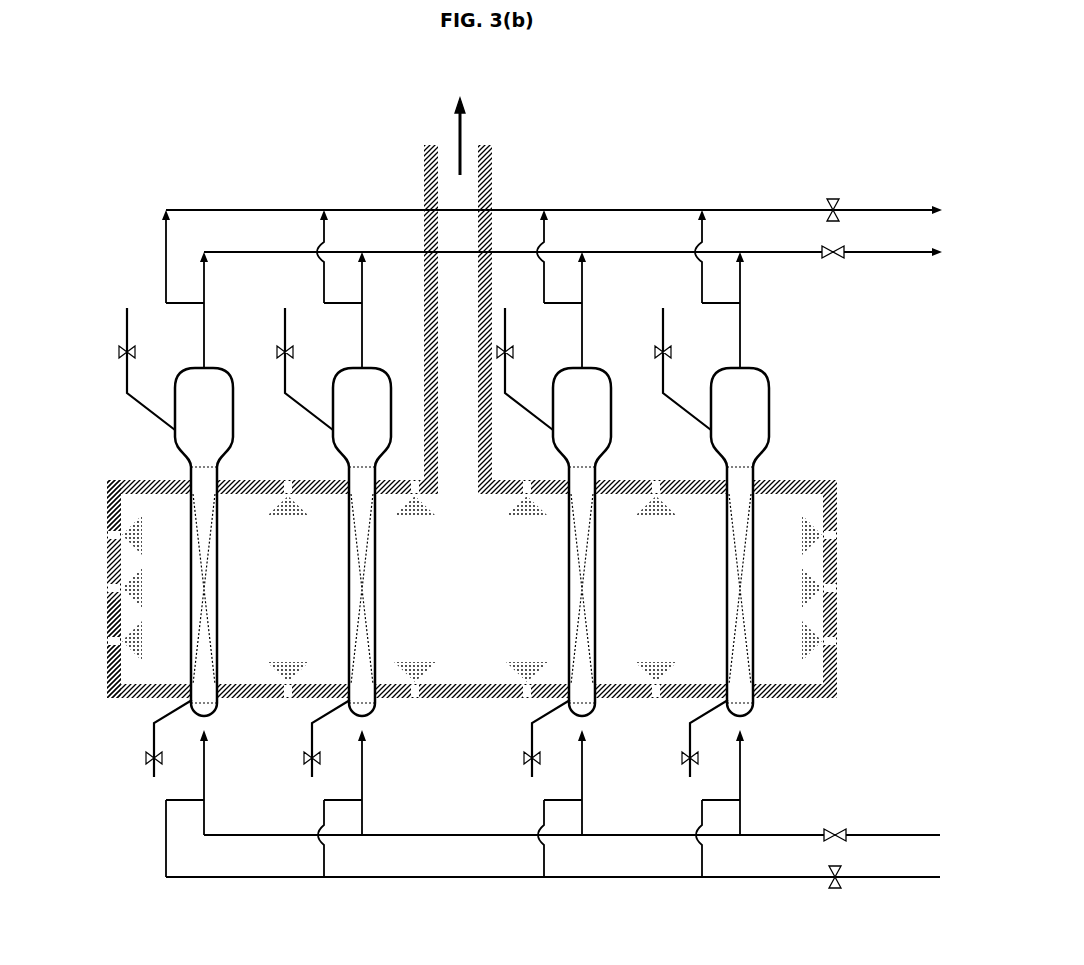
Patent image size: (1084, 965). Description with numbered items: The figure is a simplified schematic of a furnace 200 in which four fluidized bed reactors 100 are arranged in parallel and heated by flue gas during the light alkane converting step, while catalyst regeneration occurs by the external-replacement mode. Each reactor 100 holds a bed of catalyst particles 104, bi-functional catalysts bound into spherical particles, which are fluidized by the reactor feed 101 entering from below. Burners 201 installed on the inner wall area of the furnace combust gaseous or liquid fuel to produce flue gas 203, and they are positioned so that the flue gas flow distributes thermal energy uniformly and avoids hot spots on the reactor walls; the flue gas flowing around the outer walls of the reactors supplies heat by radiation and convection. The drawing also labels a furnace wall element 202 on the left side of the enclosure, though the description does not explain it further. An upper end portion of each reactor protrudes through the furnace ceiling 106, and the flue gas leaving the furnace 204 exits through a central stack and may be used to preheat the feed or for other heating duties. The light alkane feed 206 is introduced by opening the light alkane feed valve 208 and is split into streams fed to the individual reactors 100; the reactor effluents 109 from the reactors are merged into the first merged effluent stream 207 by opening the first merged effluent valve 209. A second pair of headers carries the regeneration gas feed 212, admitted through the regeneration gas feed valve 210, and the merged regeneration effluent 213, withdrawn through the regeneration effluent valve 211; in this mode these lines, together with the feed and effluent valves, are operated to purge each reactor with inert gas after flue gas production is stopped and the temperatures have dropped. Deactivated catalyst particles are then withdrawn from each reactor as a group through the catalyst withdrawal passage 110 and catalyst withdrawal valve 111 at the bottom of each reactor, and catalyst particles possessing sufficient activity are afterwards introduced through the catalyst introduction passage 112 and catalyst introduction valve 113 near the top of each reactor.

The fluidized bed reactor 100 is at (769, 398).
The reactor feed 101 is at (745, 752).
The catalyst particles 104 is at (200, 500).
The furnace ceiling 106 is at (790, 482).
The reactor effluent 109 is at (742, 348).
The catalyst withdrawal passage 110 is at (152, 732).
The catalyst withdrawal valve 111 is at (148, 762).
The catalyst introduction passage 112 is at (125, 328).
The catalyst introduction valve 113 is at (120, 352).
The furnace 200 is at (498, 499).
The burner 201 is at (108, 533).
The furnace wall 202 is at (105, 617).
The flue gas 203 is at (112, 497).
The flue gas leaving the furnace 204 is at (463, 143).
The light alkane feed 206 is at (893, 835).
The first merged effluent stream 207 is at (897, 254).
The light alkane feed valve 208 is at (840, 828).
The first merged effluent valve 209 is at (840, 258).
The regeneration gas feed valve 210 is at (840, 886).
The regeneration effluent valve 211 is at (840, 203).
The regeneration gas feed 212 is at (895, 880).
The merged regeneration effluent 213 is at (893, 210).